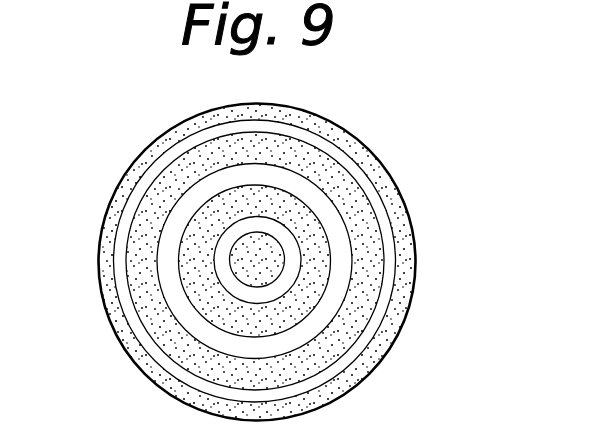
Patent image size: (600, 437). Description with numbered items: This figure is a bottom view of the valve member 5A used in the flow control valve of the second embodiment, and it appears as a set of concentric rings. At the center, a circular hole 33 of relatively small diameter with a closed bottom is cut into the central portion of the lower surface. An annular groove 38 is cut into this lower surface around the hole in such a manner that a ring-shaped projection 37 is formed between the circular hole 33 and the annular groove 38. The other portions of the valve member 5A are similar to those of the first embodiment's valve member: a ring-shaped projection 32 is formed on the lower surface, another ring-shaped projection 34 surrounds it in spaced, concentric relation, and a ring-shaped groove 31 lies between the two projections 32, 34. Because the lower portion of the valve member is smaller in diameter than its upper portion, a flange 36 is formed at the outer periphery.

The valve member 5A is at (405, 202).
The ring-shaped groove 31 is at (340, 183).
The ring-shaped projection 32 is at (200, 192).
The circular hole 33 is at (237, 283).
The ring-shaped projection 34 is at (393, 253).
The flange 36 is at (413, 308).
The ring-shaped projection 37 is at (218, 252).
The annular groove 38 is at (207, 217).